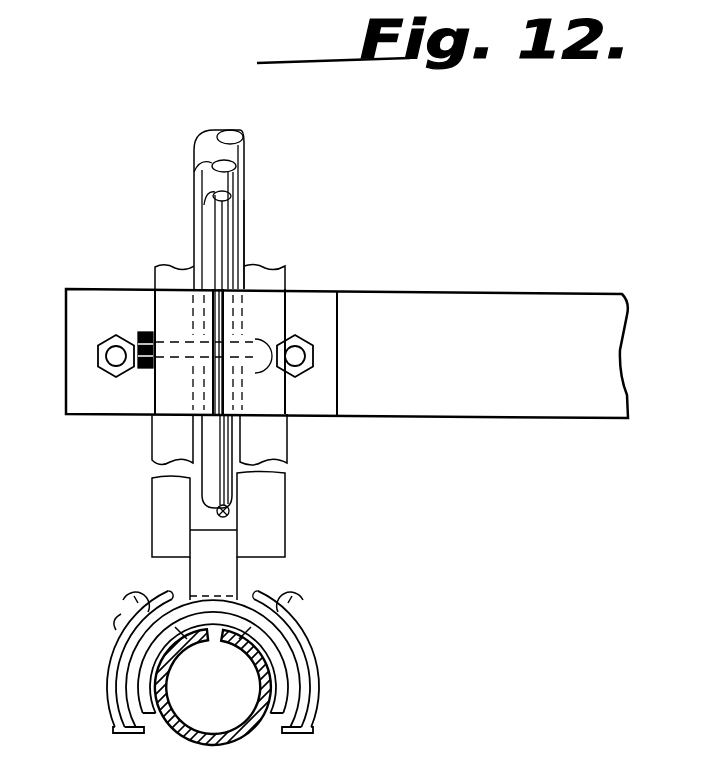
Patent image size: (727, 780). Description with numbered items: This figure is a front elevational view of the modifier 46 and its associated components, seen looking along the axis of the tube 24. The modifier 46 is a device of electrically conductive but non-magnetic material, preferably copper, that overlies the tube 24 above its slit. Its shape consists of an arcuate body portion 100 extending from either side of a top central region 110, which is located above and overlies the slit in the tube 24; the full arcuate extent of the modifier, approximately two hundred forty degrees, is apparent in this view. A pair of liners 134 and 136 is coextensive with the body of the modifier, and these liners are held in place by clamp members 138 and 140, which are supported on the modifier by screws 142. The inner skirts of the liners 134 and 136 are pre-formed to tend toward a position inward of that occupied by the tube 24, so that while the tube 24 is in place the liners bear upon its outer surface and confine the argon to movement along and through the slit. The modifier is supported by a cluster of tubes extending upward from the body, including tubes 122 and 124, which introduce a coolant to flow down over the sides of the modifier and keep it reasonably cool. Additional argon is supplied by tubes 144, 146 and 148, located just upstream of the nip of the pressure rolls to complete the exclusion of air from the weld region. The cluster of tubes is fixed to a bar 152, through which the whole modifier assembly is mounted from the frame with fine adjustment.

The bar 152 is at (565, 270).
The argon supply tube 144 is at (233, 152).
The argon supply tube 146 is at (238, 181).
The argon supply tube 148 is at (222, 228).
The coolant tube 124 is at (155, 275).
The coolant tube 122 is at (283, 273).
The top central region 110 is at (208, 592).
The arcuate body portion 100 is at (246, 588).
The liner 134 is at (278, 661).
The liner 136 is at (150, 654).
The clamp member 138 is at (316, 704).
The modifier 46 is at (97, 689).
The screws 142 is at (122, 603).
The clamp member 140 is at (118, 624).
The tube 24 is at (232, 746).